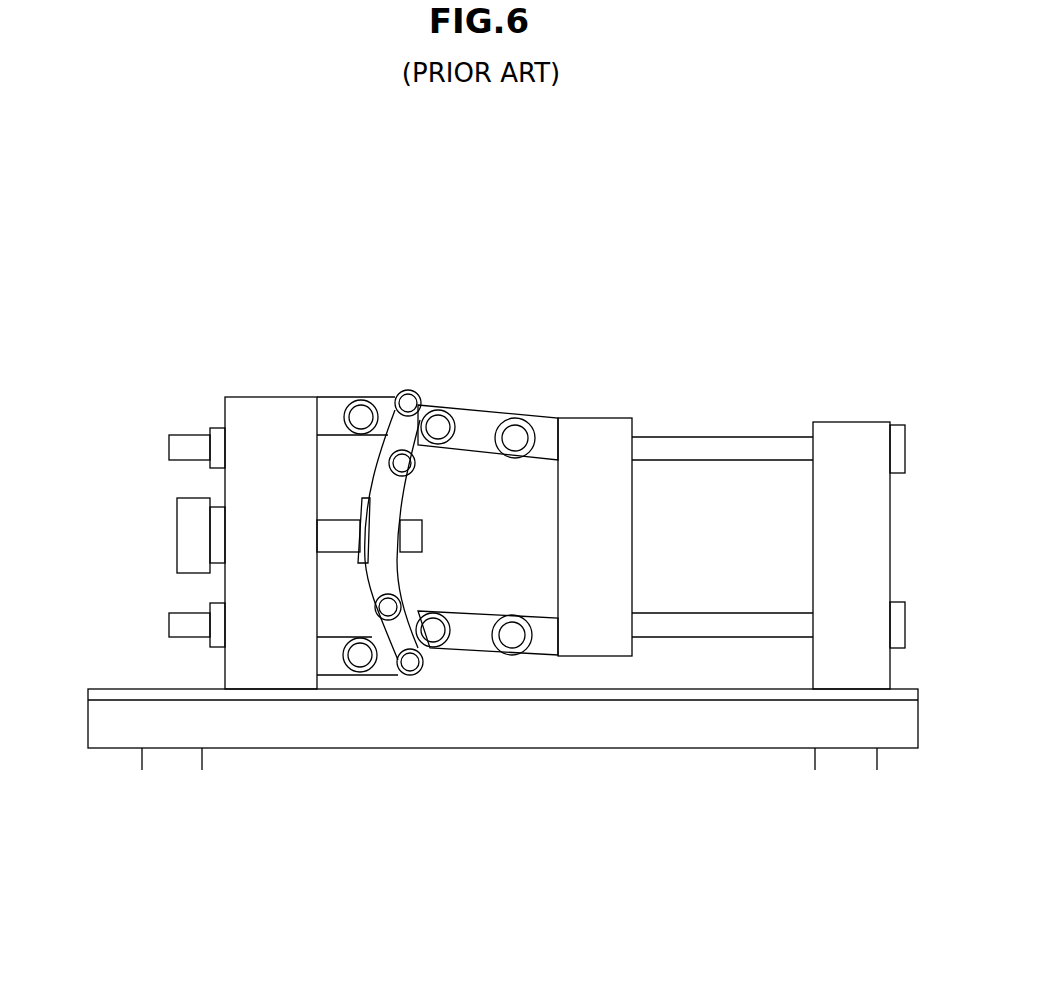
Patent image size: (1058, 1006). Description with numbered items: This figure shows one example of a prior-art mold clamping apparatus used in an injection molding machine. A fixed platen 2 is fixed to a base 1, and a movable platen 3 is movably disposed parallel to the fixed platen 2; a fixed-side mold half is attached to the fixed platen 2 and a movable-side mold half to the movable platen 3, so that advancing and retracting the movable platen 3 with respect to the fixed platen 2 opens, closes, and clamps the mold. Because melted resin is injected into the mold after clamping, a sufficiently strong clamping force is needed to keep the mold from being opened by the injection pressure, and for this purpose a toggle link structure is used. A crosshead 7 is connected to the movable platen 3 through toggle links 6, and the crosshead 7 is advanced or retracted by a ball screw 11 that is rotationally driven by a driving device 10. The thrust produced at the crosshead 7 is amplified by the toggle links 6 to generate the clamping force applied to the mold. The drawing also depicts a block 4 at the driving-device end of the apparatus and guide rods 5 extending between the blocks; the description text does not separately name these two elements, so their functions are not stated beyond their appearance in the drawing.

The base 1 is at (350, 715).
The fixed platen 2 is at (848, 422).
The movable platen 3 is at (595, 425).
The fixed block 4 is at (270, 403).
The guide rods 5 is at (723, 442).
The toggle links 6 is at (480, 417).
The crosshead 7 is at (377, 480).
The driving device 10 is at (177, 537).
The ball screw 11 is at (338, 542).